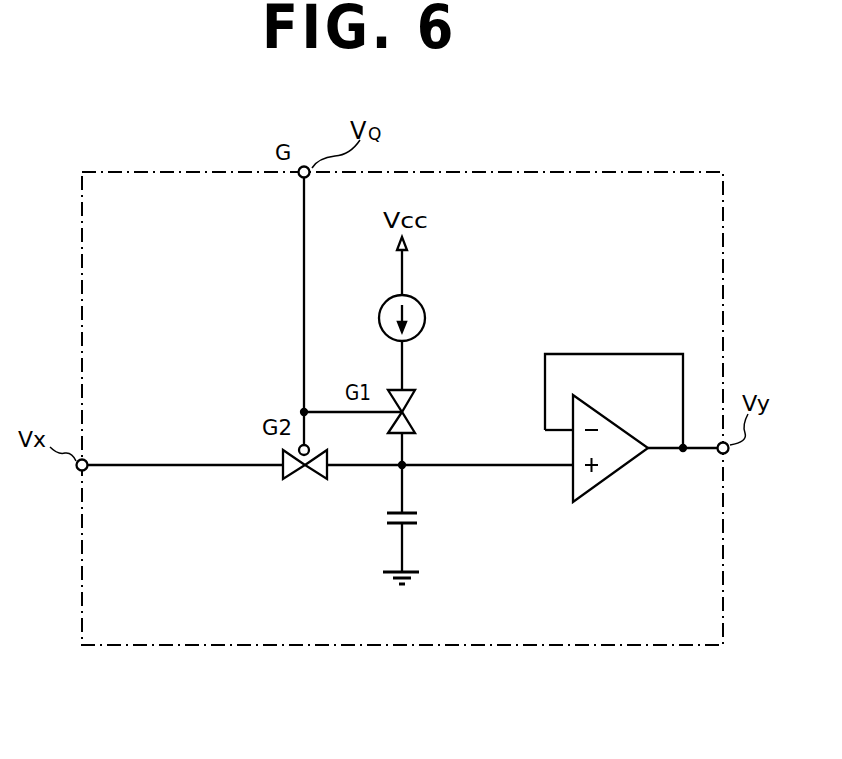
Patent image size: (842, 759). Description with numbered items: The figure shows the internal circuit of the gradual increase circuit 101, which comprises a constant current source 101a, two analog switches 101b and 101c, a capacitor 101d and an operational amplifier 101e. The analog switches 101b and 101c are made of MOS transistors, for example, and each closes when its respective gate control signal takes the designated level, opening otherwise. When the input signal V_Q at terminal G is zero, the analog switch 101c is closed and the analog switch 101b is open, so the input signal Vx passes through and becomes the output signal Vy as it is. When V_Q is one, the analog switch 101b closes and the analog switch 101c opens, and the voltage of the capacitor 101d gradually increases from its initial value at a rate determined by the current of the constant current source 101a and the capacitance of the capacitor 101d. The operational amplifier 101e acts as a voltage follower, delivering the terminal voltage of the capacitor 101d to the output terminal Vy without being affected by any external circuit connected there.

The gradual increase circuit 101 is at (243, 646).
The constant current source 101a is at (425, 302).
The analog switch 101b is at (416, 402).
The analog switch 101c is at (300, 480).
The capacitor 101d is at (420, 518).
The operational amplifier 101e is at (618, 472).